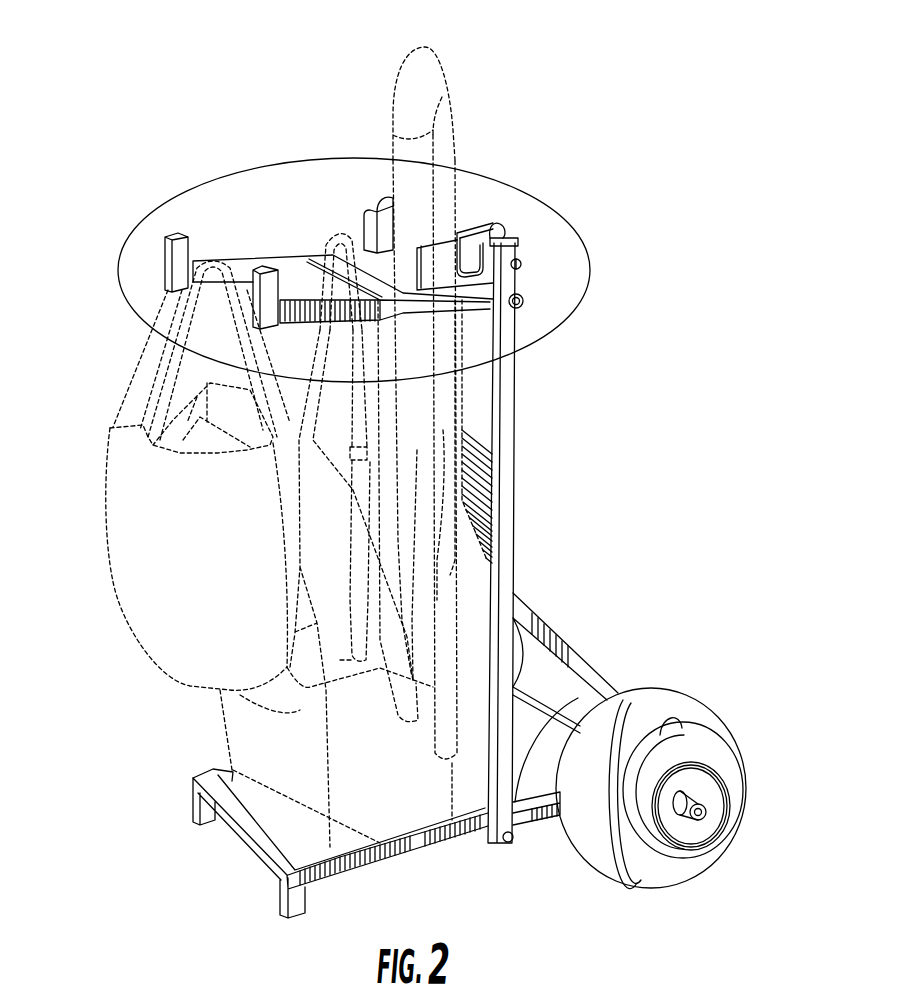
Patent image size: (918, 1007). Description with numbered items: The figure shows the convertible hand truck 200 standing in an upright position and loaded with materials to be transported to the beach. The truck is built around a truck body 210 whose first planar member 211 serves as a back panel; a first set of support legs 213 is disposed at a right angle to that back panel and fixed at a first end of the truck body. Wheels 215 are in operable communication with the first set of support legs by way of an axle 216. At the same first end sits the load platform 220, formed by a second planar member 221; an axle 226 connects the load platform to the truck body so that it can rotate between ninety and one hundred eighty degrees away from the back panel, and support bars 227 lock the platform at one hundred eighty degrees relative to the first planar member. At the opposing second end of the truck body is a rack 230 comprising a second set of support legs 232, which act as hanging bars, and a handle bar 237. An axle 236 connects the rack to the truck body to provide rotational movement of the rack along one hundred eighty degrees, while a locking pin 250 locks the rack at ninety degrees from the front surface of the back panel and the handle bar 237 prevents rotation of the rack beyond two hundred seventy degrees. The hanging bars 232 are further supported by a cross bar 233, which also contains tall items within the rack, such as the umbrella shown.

The convertible hand truck 200 is at (631, 92).
The truck body 210 is at (513, 380).
The first planar member 211 is at (488, 503).
The first set of support legs 213 is at (641, 692).
The wheels 215 is at (663, 731).
The axle 216 is at (704, 812).
The load platform 220 is at (261, 857).
The second planar member 221 is at (262, 816).
The axle 226 is at (513, 842).
The support bars 227 is at (598, 681).
The rack 230 is at (253, 172).
The second set of support legs 232 is at (312, 285).
The cross bar 233 is at (413, 288).
The axle 236 is at (524, 304).
The handle bar 237 is at (460, 232).
The locking pin 250 is at (522, 264).